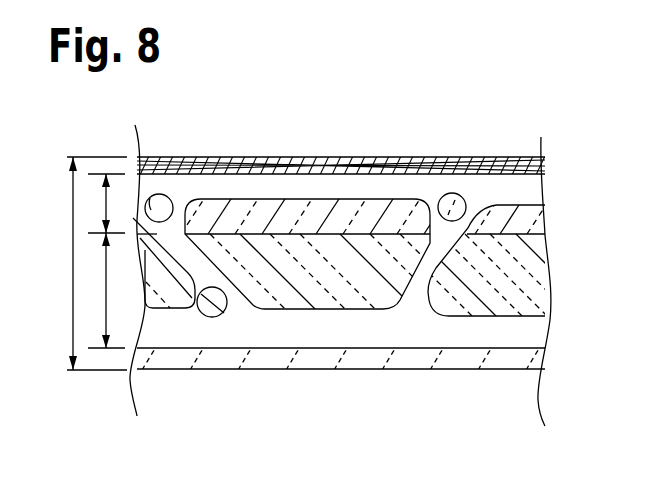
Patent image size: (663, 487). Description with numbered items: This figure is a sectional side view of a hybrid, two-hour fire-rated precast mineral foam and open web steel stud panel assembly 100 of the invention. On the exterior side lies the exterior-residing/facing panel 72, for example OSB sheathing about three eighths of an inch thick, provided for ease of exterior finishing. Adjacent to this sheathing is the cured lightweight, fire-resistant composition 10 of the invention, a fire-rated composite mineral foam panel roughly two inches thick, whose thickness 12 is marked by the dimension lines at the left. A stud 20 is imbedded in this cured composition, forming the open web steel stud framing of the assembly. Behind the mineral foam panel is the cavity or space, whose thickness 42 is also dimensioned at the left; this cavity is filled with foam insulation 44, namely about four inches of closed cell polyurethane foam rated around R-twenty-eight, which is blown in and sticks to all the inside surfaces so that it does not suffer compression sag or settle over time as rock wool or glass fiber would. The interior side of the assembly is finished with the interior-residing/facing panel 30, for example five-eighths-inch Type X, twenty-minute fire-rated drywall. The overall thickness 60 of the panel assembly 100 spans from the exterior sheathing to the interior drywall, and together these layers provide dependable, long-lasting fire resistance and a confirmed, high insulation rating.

The panel assembly 100 is at (473, 142).
The exterior-residing/facing panel 72 is at (225, 164).
The lightweight, fire-resistant composition 10 is at (352, 199).
The foam insulation 44 is at (508, 283).
The building/room-interior-residing/facing panel 30 is at (258, 358).
The stud 20 is at (330, 343).
The thickness of the panel assembly 60 is at (73, 260).
The thickness of the cured composition 12 is at (105, 203).
The thickness of the cavity or space 42 is at (107, 286).